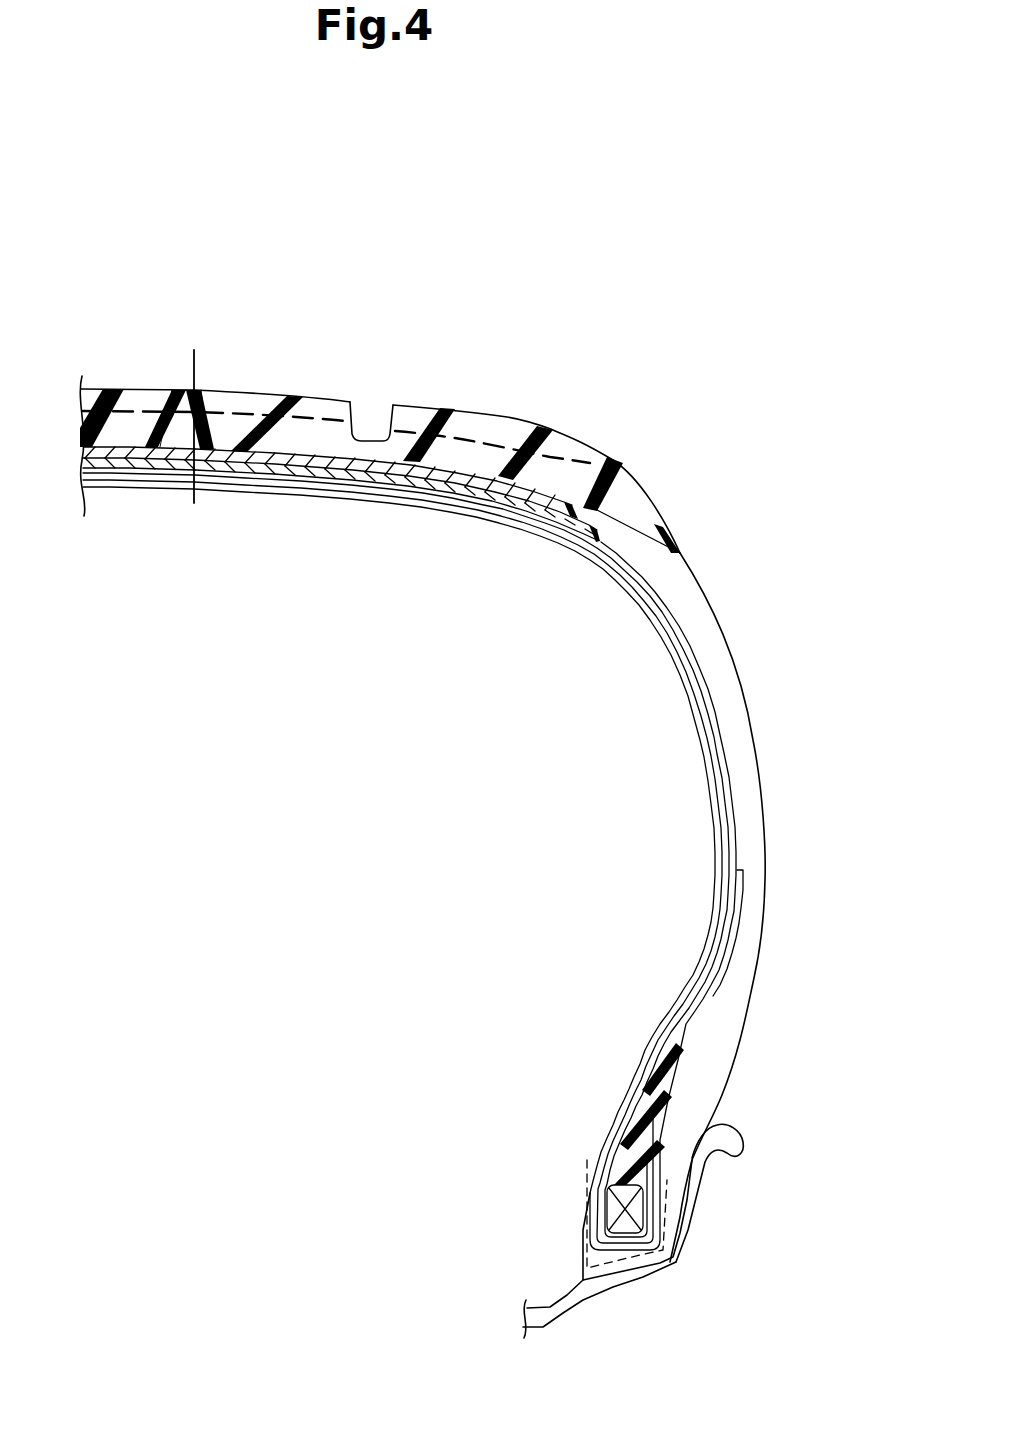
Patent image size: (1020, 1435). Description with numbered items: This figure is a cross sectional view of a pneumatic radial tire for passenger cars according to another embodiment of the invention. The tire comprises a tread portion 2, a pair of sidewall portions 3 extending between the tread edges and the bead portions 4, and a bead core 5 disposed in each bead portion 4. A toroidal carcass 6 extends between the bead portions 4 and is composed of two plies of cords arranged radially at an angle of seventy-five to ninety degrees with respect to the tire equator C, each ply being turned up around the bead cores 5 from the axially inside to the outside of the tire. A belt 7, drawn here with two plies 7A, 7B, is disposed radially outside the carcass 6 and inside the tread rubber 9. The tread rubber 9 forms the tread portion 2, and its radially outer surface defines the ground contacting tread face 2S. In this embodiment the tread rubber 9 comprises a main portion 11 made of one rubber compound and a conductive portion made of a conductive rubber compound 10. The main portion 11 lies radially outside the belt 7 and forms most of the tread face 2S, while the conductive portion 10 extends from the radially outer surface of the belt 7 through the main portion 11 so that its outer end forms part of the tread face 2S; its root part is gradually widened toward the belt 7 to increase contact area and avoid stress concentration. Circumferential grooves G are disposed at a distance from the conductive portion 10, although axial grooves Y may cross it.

The tread portion 2 is at (125, 358).
The tread face 2S is at (430, 405).
The sidewall portion 3 is at (763, 753).
The bead portion 4 is at (570, 1132).
The bead core 5 is at (610, 1208).
The carcass 6 is at (723, 817).
The belt 7 is at (760, 420).
The inner belt ply 7A is at (597, 508).
The outer belt ply 7B is at (557, 490).
The tread rubber 9 is at (243, 211).
The conductive rubber compound 10 is at (200, 400).
The main portion 11 is at (296, 400).
The circumferential groove G is at (372, 408).
The axial groove Y is at (472, 443).
The tire equator C is at (195, 490).